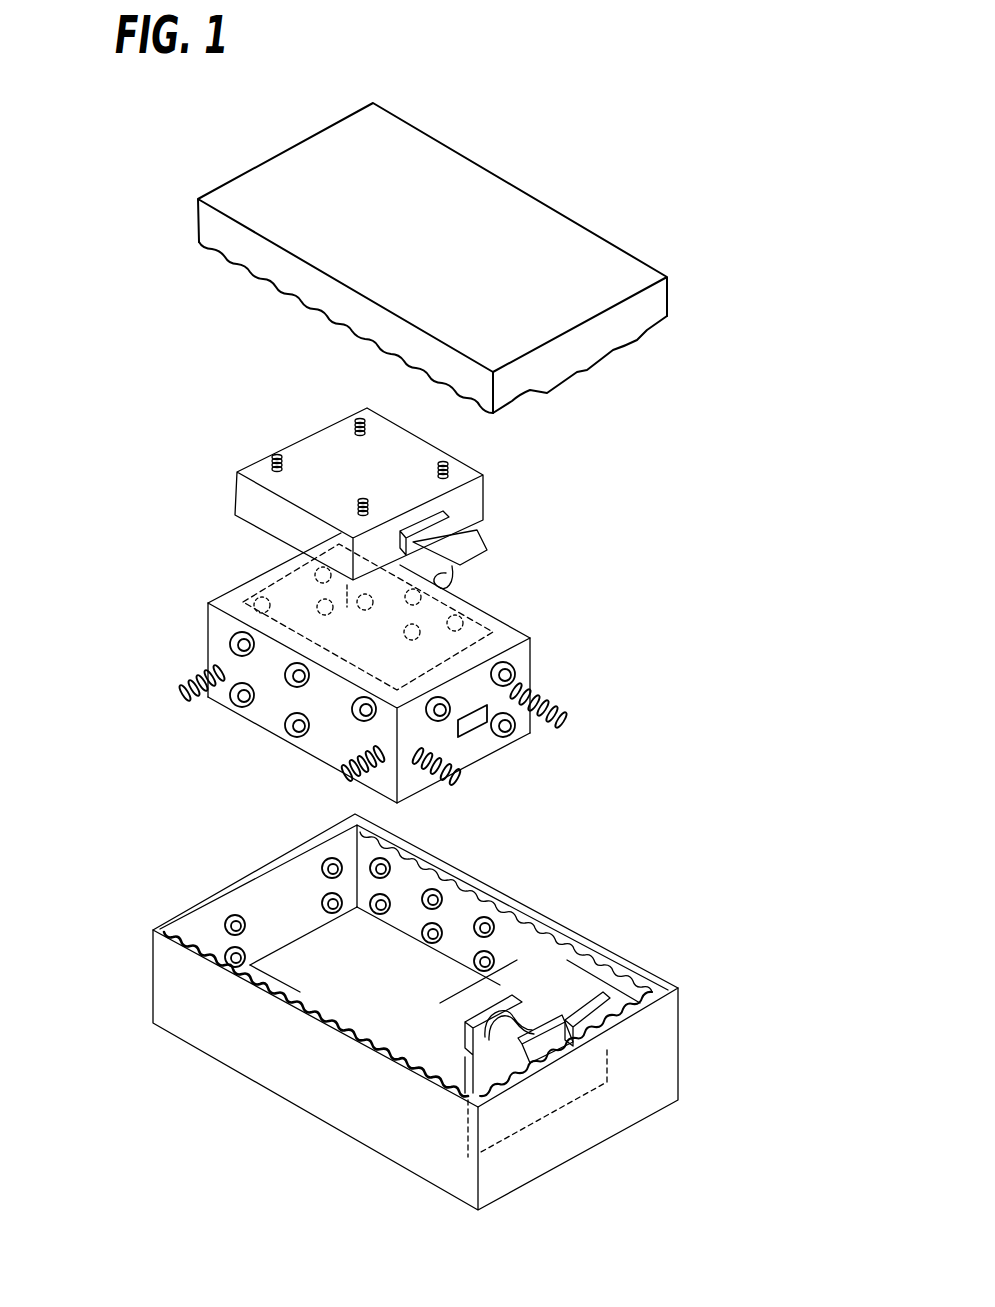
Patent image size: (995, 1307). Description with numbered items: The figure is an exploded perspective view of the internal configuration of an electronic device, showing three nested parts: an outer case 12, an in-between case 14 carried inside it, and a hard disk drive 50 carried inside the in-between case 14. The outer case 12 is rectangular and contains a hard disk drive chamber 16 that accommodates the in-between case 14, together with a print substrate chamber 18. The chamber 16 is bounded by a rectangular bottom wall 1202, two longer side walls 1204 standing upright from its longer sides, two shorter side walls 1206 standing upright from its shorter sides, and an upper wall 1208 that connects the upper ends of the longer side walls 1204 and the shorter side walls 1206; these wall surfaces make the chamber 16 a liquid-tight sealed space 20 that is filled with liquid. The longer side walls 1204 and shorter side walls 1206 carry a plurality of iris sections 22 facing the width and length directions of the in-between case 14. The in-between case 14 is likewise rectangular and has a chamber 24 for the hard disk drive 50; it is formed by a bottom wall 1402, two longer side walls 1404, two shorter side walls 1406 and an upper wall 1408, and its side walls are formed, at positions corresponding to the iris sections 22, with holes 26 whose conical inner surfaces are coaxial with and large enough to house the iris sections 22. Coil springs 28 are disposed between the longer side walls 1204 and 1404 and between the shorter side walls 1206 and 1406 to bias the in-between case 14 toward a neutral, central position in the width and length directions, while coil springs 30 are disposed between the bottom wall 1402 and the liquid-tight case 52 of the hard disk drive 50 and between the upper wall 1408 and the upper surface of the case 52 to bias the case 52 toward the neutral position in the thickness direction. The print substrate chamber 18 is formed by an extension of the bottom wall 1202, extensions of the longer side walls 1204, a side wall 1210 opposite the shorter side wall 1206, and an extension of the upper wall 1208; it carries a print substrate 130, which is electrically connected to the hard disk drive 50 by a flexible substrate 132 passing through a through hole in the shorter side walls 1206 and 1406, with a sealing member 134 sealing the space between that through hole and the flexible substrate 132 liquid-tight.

The outer case 12 is at (420, 1032).
The in-between case 14 is at (410, 649).
The hard disk drive chamber 16 is at (307, 987).
The print substrate chamber 18 is at (443, 1052).
The liquid-tight sealed space 20 is at (342, 1008).
The iris sections 22 is at (230, 918).
The chamber 24 is at (483, 607).
The holes 26 is at (294, 678).
The coil spring 28 is at (180, 697).
The coil spring 30 is at (443, 466).
The hard disk drive 50 is at (453, 687).
The liquid-tight case 52 is at (485, 505).
The print substrate 130 is at (597, 1013).
The flexible substrate 132 is at (477, 548).
The sealing member 134 is at (470, 1042).
The bottom wall 1202 is at (270, 972).
The longer side walls 1204 is at (167, 977).
The shorter side walls 1206 is at (172, 916).
The upper wall 1208 is at (455, 186).
The side wall 1210 is at (594, 1125).
The bottom wall 1402 is at (263, 730).
The longer side walls 1404 is at (218, 623).
The shorter side walls 1406 is at (238, 588).
The upper wall 1408 is at (270, 585).